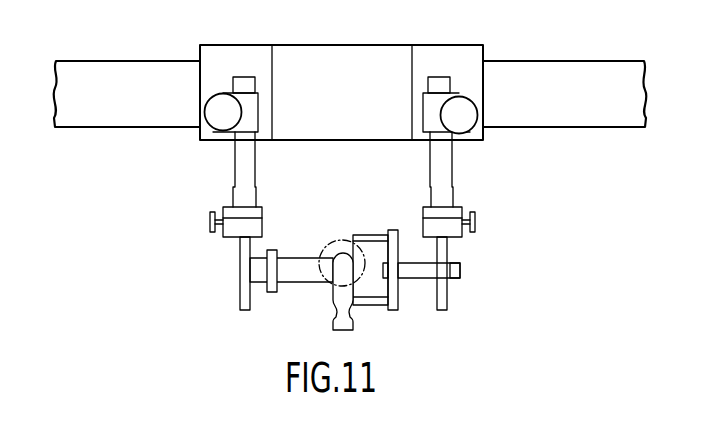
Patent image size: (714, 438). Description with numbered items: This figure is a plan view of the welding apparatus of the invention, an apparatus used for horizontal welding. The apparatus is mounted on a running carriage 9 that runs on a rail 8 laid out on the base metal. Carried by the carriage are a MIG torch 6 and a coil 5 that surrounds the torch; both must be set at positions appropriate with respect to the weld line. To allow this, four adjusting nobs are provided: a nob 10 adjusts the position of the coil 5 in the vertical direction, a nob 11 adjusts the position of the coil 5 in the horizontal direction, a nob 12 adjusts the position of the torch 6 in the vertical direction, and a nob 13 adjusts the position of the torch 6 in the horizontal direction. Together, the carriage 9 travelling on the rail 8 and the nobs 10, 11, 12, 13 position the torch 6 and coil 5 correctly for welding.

The coil 5 is at (333, 233).
The MIG torch 6 is at (340, 287).
The rail 8 is at (559, 67).
The running carriage 9 is at (348, 54).
The nob 10 is at (466, 119).
The nob 11 is at (475, 230).
The nob 12 is at (214, 117).
The nob 13 is at (211, 228).